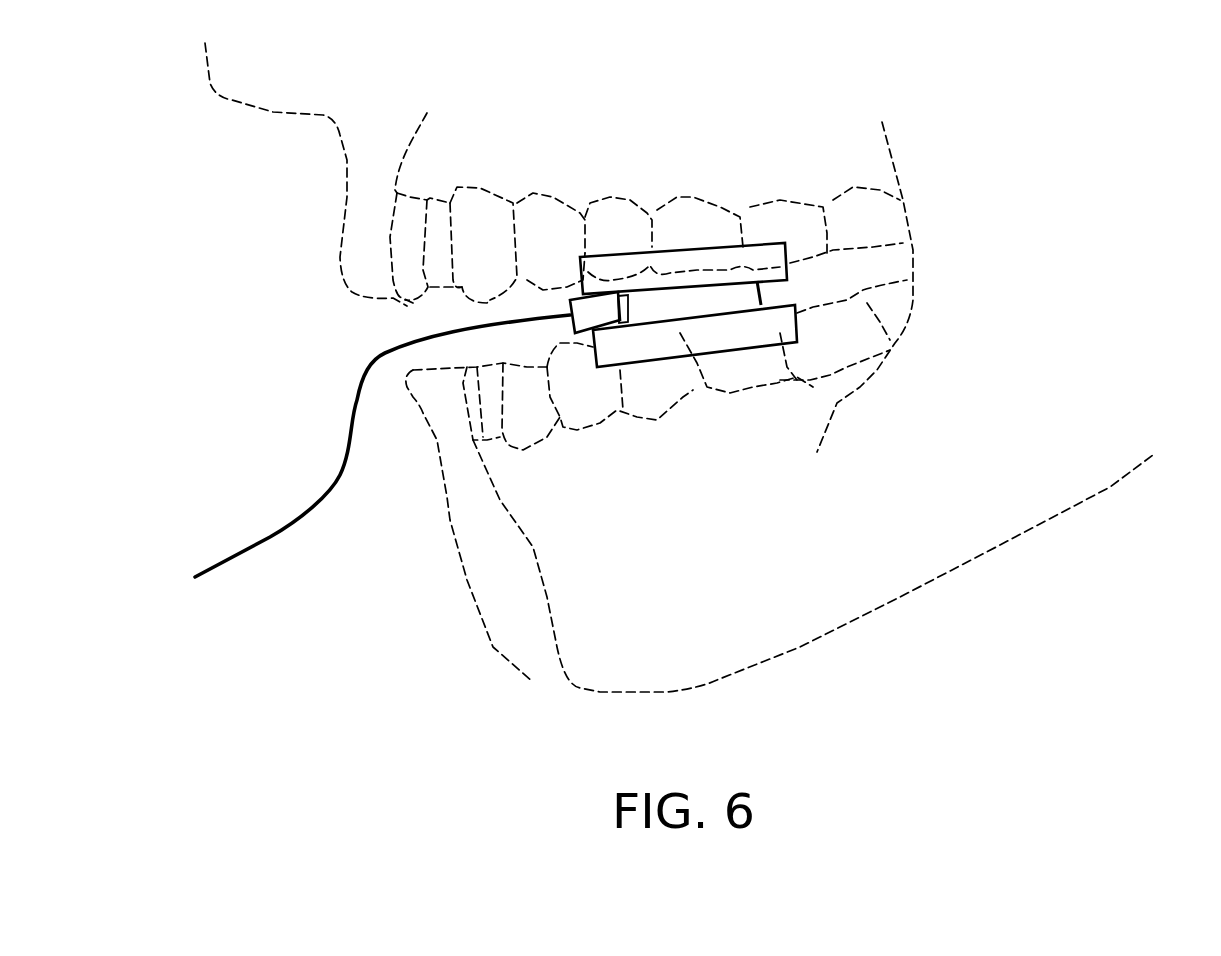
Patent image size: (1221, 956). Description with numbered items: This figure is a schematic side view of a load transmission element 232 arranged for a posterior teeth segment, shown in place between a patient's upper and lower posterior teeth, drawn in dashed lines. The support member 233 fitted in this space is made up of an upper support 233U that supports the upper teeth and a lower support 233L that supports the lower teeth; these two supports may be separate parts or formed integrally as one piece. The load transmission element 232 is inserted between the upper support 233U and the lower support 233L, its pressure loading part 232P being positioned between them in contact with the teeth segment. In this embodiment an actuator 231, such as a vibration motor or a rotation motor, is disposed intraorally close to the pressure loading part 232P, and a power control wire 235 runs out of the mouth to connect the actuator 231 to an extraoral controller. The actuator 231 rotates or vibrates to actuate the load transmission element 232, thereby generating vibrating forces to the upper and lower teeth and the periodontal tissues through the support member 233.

The actuator 231 is at (598, 312).
The load transmission element 232 is at (872, 307).
The pressure loading part 232P is at (680, 300).
The support member 233 is at (878, 282).
The upper support 233U is at (787, 257).
The lower support 233L is at (798, 327).
The power control wire 235 is at (268, 533).